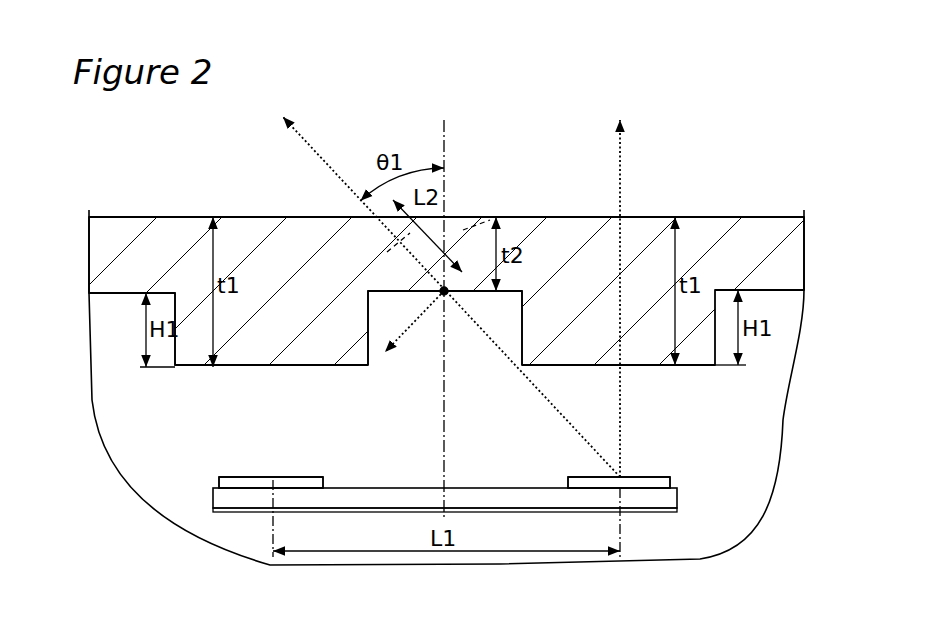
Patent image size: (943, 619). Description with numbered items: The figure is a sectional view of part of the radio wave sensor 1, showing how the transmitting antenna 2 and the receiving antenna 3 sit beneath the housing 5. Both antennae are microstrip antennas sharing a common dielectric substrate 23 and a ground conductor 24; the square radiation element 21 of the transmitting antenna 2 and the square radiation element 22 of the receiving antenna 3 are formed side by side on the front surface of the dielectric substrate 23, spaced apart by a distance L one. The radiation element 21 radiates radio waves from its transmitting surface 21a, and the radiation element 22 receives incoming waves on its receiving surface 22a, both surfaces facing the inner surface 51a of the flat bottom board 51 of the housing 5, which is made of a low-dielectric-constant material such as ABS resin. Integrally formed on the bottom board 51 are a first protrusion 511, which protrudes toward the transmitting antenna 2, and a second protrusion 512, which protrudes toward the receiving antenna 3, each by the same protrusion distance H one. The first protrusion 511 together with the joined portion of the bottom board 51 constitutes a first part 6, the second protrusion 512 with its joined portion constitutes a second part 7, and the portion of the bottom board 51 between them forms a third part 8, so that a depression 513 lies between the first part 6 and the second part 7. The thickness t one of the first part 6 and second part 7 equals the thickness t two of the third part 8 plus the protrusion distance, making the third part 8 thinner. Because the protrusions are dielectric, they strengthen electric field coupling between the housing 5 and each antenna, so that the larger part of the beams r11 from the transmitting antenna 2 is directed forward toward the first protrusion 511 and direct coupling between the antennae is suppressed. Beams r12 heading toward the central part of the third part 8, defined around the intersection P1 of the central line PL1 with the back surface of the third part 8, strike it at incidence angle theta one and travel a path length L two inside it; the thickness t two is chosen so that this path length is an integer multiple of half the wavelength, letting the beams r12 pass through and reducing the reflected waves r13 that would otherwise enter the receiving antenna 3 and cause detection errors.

The radio wave sensor 1 is at (776, 192).
The transmitting antenna 2 is at (640, 475).
The receiving antenna 3 is at (238, 476).
The housing 5 is at (113, 211).
The first part 6 is at (636, 228).
The second part 7 is at (252, 230).
The third part 8 is at (459, 223).
The radiation element 21 is at (658, 480).
The transmitting surface 21a is at (583, 478).
The radiation element 22 is at (306, 480).
The receiving surface 22a is at (272, 478).
The dielectric substrate 23 is at (670, 496).
The ground conductor 24 is at (662, 512).
The bottom board 51 is at (145, 217).
The inner surface 51a is at (127, 294).
The first protrusion 511 is at (643, 352).
The second protrusion 512 is at (305, 352).
The depression 513 is at (390, 308).
The beams r11 is at (622, 142).
The beams r12 is at (315, 150).
The reflected waves r13 is at (412, 335).
The central line PL1 is at (449, 128).
The intersection P1 is at (458, 311).